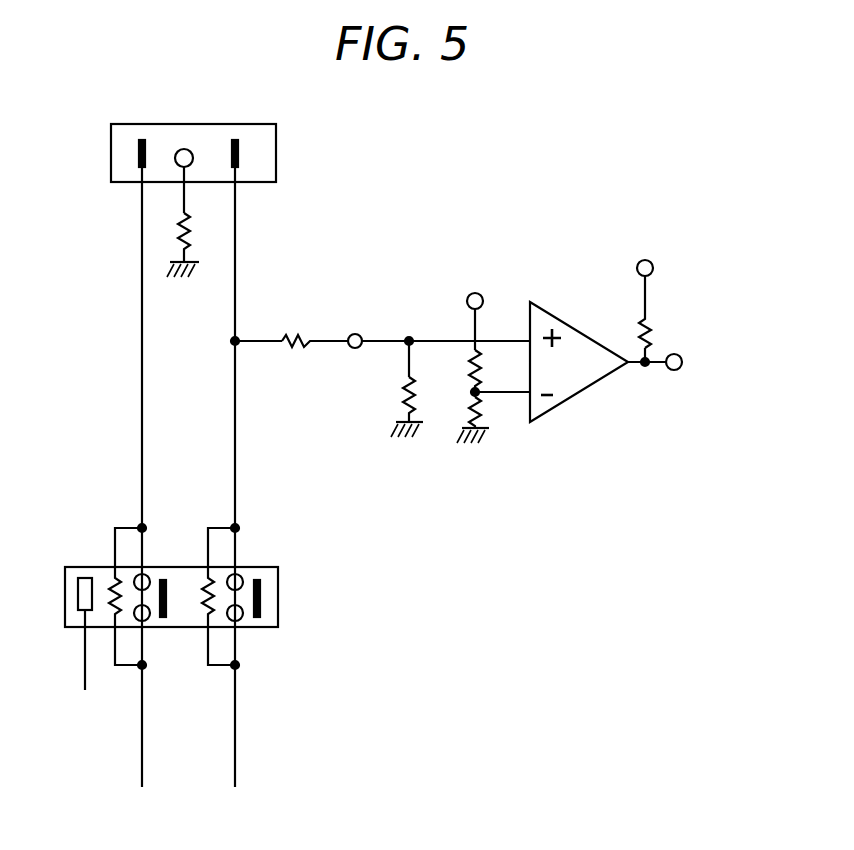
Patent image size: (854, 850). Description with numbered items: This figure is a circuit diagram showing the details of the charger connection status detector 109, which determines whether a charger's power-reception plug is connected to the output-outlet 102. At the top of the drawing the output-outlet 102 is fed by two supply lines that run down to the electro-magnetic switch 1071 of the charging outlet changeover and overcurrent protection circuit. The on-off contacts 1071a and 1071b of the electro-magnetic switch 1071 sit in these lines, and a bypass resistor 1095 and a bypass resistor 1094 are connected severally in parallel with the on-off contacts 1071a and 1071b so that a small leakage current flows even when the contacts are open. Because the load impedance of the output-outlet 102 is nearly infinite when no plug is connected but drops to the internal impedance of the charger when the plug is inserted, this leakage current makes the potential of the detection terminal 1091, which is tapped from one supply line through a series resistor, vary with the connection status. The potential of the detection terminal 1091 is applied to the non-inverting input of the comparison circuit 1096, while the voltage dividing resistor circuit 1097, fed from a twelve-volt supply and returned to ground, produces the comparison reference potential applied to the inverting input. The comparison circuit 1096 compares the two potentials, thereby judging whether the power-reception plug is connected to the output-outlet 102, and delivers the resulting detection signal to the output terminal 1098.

The output-outlet 102 is at (276, 147).
The charger connection status detector 109 is at (486, 386).
The detection terminal 1091 is at (362, 337).
The comparison circuit 1096 is at (575, 284).
The voltage dividing resistor circuit 1097 is at (462, 403).
The output terminal 1098 is at (680, 357).
The electro-magnetic switch 1071 is at (212, 601).
The on-off contact 1071a is at (147, 597).
The on-off contact 1071b is at (242, 597).
The bypass resistor 1095 is at (105, 585).
The bypass resistor 1094 is at (205, 597).